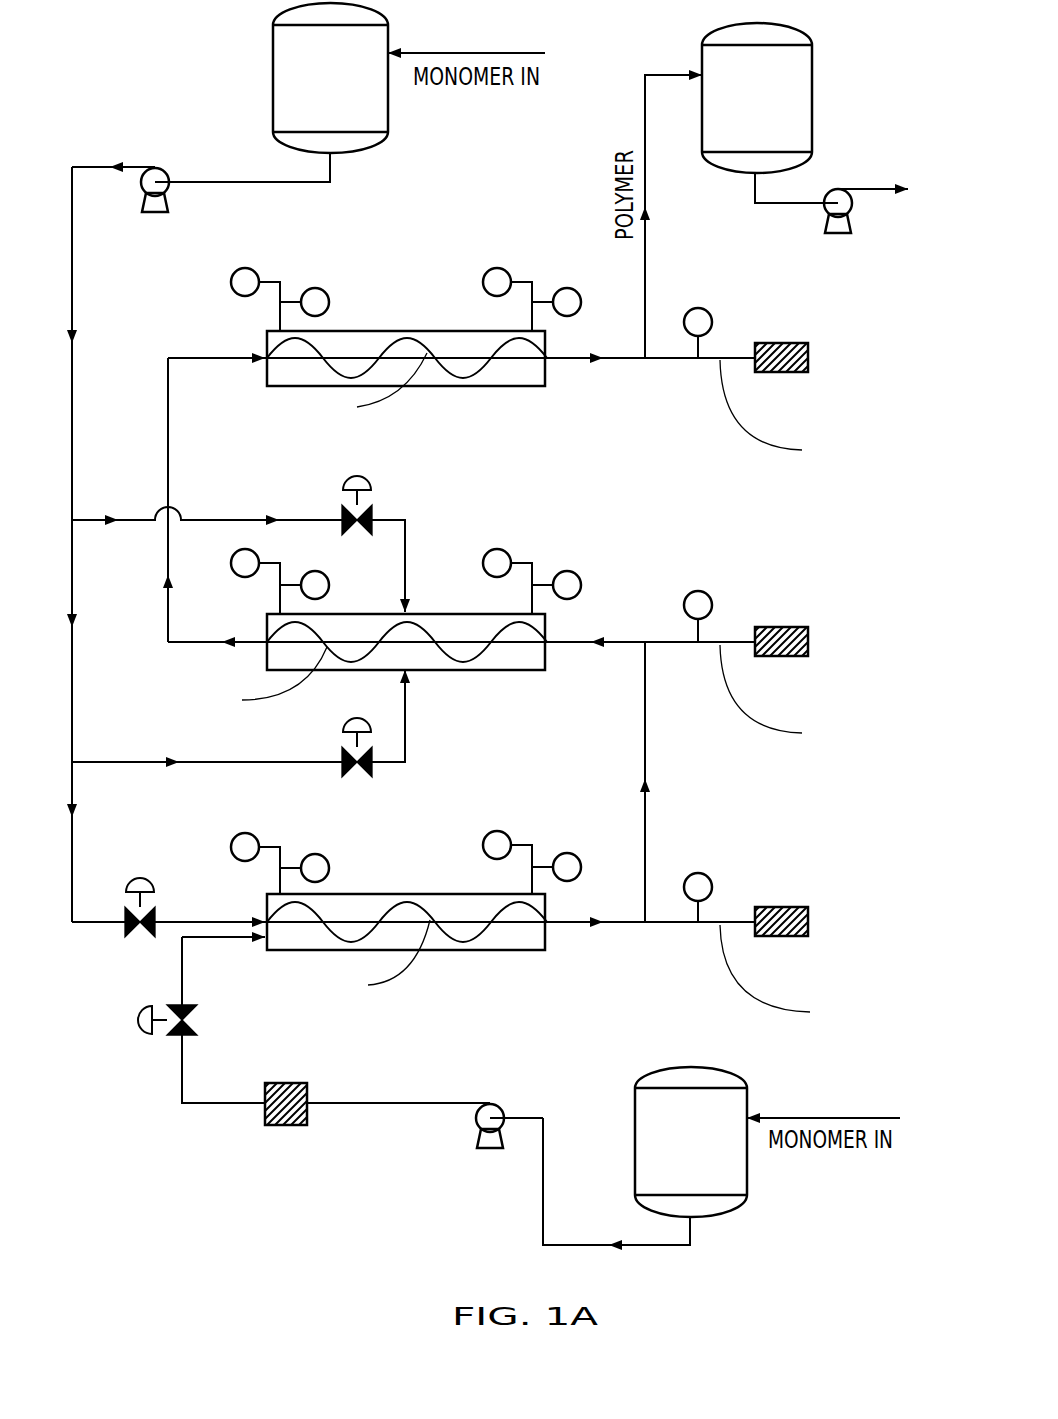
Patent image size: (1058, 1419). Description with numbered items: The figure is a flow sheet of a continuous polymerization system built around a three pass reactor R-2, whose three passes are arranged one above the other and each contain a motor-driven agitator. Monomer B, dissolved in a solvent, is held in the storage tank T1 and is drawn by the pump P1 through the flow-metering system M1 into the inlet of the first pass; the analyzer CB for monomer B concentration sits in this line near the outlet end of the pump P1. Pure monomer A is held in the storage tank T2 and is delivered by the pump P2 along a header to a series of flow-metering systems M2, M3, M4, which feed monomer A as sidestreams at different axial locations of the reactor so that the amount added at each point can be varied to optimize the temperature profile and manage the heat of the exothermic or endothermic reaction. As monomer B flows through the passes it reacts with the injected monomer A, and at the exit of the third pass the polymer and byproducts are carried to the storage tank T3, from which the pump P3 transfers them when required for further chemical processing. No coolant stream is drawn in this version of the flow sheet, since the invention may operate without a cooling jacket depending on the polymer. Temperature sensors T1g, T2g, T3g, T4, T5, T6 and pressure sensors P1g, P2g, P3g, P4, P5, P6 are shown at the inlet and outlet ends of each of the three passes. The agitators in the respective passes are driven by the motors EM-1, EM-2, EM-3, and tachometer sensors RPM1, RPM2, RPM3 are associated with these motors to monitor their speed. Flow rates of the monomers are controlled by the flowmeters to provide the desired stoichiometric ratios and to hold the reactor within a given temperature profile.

The storage tank T1 is at (661, 1142).
The storage tank T2 is at (301, 78).
The storage tank T3 is at (789, 98).
The pump P1 is at (478, 1146).
The pump P2 is at (145, 210).
The pump P3 is at (829, 231).
The flow-metering system M1 is at (149, 1026).
The flow-metering system M2 is at (132, 892).
The flow-metering system M3 is at (310, 755).
The flow-metering system M4 is at (310, 499).
The three pass reactor R-2 is at (418, 386).
The temperature sensor T1g is at (238, 863).
The temperature sensor T2g is at (490, 862).
The temperature sensor T3g is at (490, 581).
The temperature sensor T4 is at (238, 580).
The temperature sensor T5 is at (238, 299).
The temperature sensor T6 is at (490, 299).
The pressure sensor P1g is at (323, 869).
The pressure sensor P2g is at (575, 868).
The pressure sensor P3g is at (575, 586).
The pressure sensor P4 is at (323, 586).
The pressure sensor P5 is at (323, 303).
The pressure sensor P6 is at (575, 303).
The tachometer sensor RPM1 is at (731, 895).
The tachometer sensor RPM2 is at (731, 614).
The tachometer sensor RPM3 is at (731, 330).
The motor EM-1 is at (810, 967).
The motor EM-2 is at (810, 687).
The motor EM-3 is at (810, 403).
The analyzer CB is at (293, 1121).